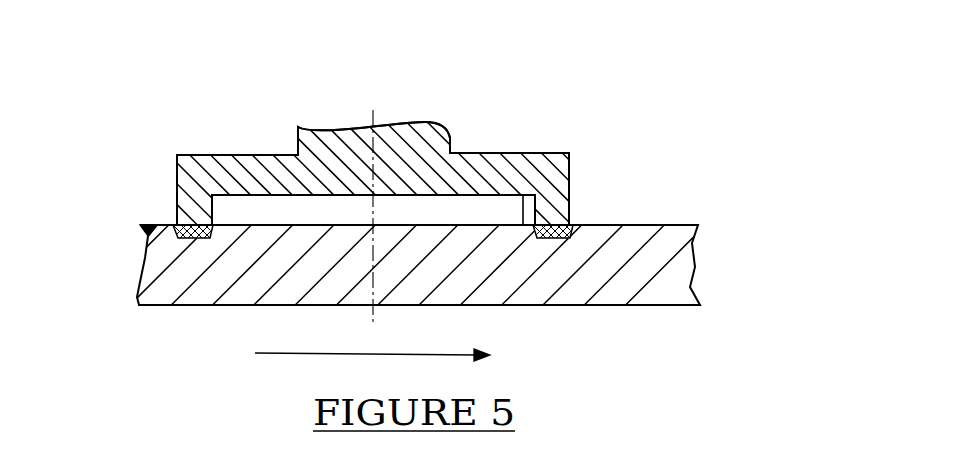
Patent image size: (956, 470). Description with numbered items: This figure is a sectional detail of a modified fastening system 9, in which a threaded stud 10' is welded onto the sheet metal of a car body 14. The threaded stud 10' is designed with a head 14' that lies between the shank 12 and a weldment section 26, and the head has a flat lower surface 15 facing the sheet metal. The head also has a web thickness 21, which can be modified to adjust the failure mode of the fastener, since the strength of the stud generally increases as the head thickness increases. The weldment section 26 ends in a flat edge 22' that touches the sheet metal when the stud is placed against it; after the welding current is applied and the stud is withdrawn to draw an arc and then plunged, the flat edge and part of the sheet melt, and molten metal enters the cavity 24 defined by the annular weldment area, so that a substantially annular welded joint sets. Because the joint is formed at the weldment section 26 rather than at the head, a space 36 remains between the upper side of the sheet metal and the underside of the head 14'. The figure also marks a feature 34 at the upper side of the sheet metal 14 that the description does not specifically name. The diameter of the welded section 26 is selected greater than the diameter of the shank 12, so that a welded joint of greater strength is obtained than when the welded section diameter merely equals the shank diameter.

The fastening system 9 is at (607, 102).
The threaded stud 10' is at (373, 151).
The shank 12 is at (438, 147).
The sheet metal of a car body 14 is at (391, 281).
The head 14' is at (157, 174).
The flat lower surface 15 is at (503, 195).
The web thickness 21 is at (354, 354).
The flat edge 22' is at (324, 303).
The cavity 24 is at (523, 226).
The weldment section 26 is at (572, 230).
The substrate surface 34 is at (467, 226).
The space 36 is at (158, 185).